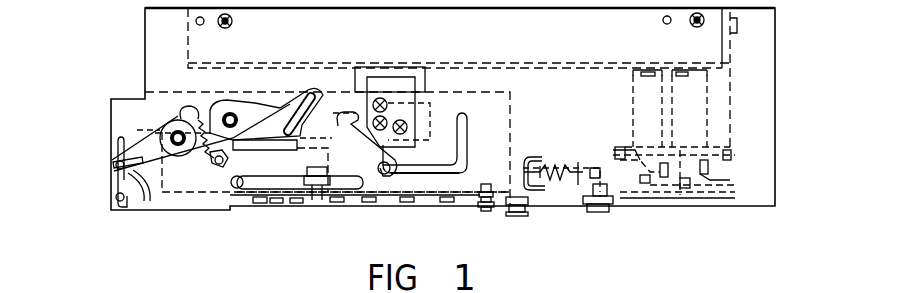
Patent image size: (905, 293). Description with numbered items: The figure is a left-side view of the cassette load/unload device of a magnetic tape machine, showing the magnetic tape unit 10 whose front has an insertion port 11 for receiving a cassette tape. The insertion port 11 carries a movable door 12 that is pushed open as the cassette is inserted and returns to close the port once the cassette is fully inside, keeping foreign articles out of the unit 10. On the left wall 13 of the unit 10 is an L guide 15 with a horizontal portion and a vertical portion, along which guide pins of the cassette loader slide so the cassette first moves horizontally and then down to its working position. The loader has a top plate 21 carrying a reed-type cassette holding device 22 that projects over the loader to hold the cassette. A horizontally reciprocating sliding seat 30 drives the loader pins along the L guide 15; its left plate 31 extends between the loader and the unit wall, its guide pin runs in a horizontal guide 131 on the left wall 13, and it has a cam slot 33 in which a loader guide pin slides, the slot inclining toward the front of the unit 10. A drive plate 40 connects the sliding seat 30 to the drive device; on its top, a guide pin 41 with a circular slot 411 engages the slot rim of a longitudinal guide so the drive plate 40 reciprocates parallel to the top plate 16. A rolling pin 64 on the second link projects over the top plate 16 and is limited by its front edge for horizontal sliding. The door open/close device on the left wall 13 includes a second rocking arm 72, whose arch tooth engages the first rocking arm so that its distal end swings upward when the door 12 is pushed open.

The magnetic tape unit 10 is at (747, 72).
The insertion port 11 is at (110, 177).
The movable door 12 is at (110, 163).
The left wall 13 is at (370, 242).
The L guide 15 is at (427, 170).
The top plate 16 is at (667, 208).
The top plate 21 is at (263, 158).
The cassette holding device 22 is at (230, 188).
The sliding seat 30 is at (460, 107).
The left plate 31 is at (197, 97).
The cam slot 33 is at (348, 113).
The drive plate 40 is at (572, 152).
The guide pin 41 is at (517, 214).
The rolling pin 64 is at (482, 208).
The second rocking arm 72 is at (257, 110).
The horizontal guide 131 is at (287, 182).
The circular slot 411 is at (533, 208).